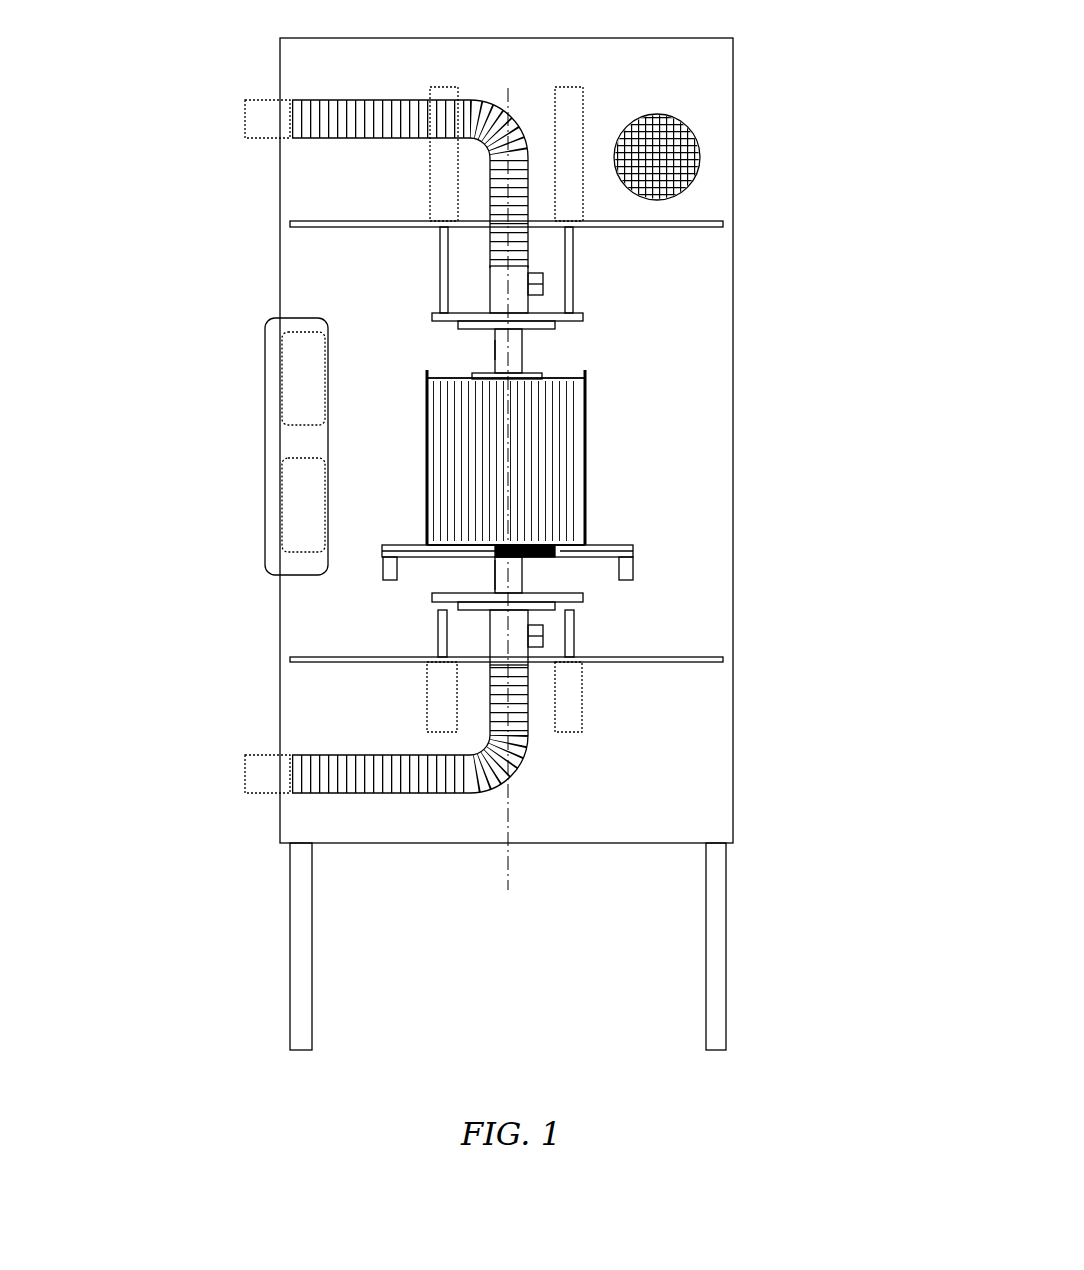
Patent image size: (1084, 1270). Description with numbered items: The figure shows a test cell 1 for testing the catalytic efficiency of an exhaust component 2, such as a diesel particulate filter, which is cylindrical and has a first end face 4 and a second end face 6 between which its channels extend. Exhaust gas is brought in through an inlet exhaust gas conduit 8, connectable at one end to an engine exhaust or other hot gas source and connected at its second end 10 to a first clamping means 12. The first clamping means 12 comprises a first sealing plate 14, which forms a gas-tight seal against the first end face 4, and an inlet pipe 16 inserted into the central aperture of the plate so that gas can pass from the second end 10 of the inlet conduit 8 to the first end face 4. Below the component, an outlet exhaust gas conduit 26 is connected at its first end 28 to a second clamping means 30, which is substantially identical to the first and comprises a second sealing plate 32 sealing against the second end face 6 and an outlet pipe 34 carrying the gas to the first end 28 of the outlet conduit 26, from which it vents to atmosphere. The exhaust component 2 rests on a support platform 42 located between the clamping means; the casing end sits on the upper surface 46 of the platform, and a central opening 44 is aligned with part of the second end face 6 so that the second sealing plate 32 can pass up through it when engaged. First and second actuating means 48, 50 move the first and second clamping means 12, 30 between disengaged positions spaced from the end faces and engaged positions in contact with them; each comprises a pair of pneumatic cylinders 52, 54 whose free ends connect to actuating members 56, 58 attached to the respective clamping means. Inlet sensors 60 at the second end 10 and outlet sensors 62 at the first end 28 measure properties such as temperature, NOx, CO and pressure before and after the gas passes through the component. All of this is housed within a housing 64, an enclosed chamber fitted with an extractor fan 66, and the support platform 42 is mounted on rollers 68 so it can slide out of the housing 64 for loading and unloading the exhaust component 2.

The test cell 1 is at (823, 140).
The exhaust component 2 is at (588, 472).
The first end face 4 is at (562, 372).
The second end face 6 is at (562, 545).
The inlet exhaust gas conduit 8 is at (273, 122).
The second end of inlet conduit 10 is at (492, 287).
The first clamping means 12 is at (483, 350).
The first sealing plate 14 is at (540, 368).
The inlet pipe 16 is at (495, 338).
The outlet exhaust gas conduit 26 is at (310, 770).
The first end of outlet conduit 28 is at (497, 640).
The second clamping means 30 is at (475, 572).
The second sealing plate 32 is at (480, 548).
The outlet pipe 34 is at (498, 578).
The support platform 42 is at (625, 550).
The central opening 44 is at (473, 557).
The upper surface 46 is at (608, 540).
The first actuating means 48 is at (572, 85).
The second actuating means 50 is at (595, 722).
The pneumatic cylinders 52 is at (443, 92).
The pneumatic cylinders 54 is at (573, 712).
The actuating member 56 is at (432, 317).
The actuating member 58 is at (583, 603).
The inlet sensors 60 is at (547, 285).
The outlet sensors 62 is at (547, 637).
The housing 64 is at (370, 843).
The extractor fan 66 is at (665, 160).
The rollers 68 is at (627, 572).